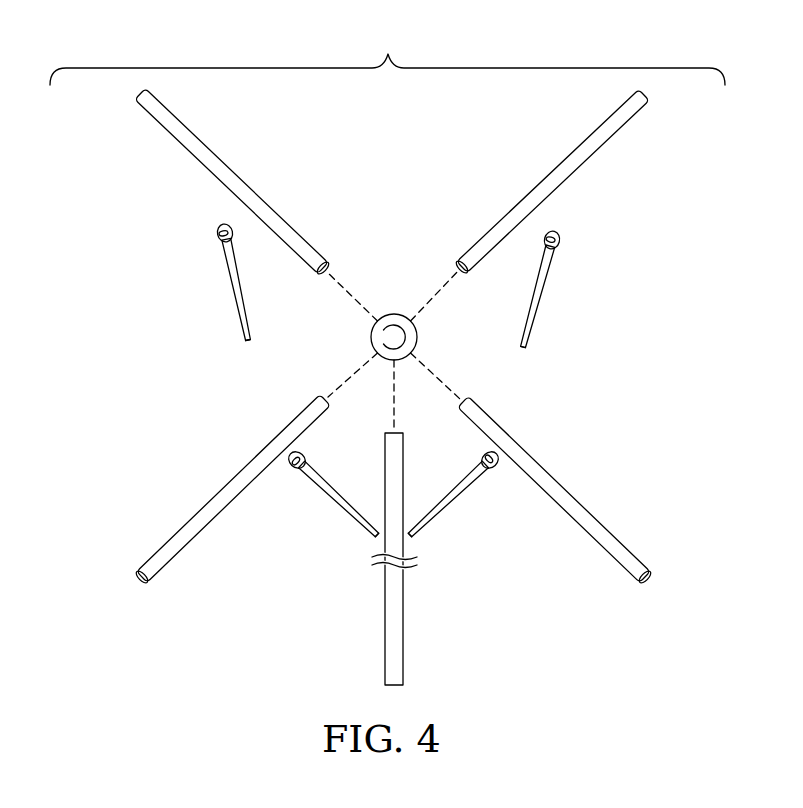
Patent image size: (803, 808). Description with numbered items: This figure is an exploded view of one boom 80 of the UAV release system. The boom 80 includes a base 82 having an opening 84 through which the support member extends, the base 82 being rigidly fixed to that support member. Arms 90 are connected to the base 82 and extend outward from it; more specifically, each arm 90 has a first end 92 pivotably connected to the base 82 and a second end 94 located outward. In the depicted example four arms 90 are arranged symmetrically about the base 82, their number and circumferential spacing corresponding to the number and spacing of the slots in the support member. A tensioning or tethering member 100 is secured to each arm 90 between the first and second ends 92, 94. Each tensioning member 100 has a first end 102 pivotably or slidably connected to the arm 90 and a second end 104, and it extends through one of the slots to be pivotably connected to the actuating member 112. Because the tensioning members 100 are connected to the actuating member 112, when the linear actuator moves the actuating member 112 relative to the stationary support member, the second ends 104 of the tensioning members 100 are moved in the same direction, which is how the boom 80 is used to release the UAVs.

The boom 80 is at (387, 56).
The base 82 is at (392, 314).
The opening 84 is at (388, 337).
The arm 90 is at (247, 173).
The first end 92 is at (452, 261).
The second end 94 is at (658, 111).
The tensioning member 100 is at (224, 281).
The first end 102 is at (212, 238).
The second end 104 is at (234, 334).
The actuating member 112 is at (385, 598).